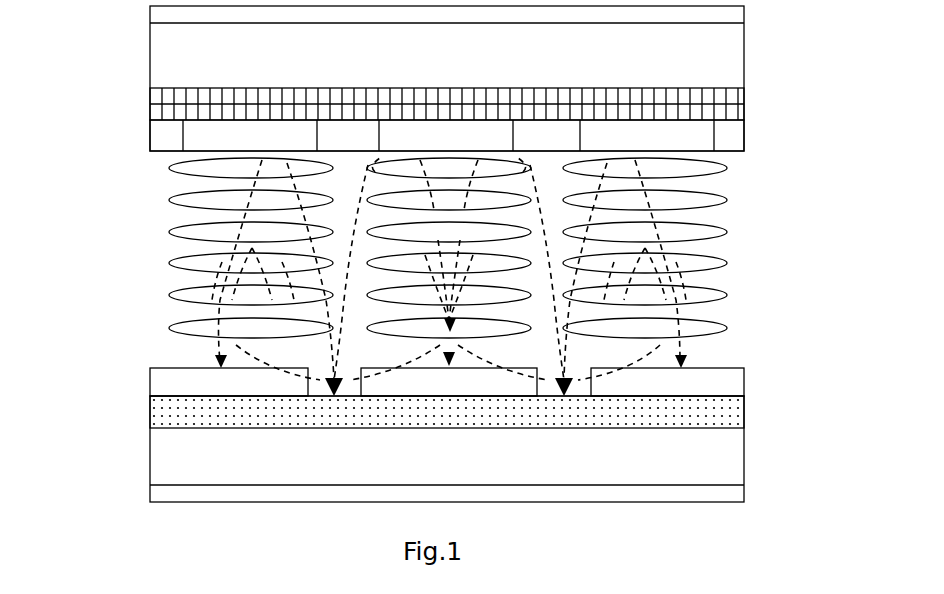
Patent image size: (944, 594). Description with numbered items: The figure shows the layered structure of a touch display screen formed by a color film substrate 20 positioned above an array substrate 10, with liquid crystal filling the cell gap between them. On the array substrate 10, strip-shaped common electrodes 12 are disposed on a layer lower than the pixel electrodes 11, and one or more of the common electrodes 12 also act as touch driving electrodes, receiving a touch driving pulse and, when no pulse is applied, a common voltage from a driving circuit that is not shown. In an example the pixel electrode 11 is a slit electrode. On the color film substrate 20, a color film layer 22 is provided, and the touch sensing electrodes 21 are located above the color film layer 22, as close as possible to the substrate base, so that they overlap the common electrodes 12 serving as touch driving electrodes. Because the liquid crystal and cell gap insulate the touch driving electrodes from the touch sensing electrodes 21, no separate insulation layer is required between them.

The array substrate 10 is at (428, 414).
The pixel electrode 11 is at (150, 386).
The common electrode 12 is at (150, 412).
The color film substrate 20 is at (427, 78).
The touch sensing electrode 21 is at (148, 98).
The color film layer 22 is at (160, 140).